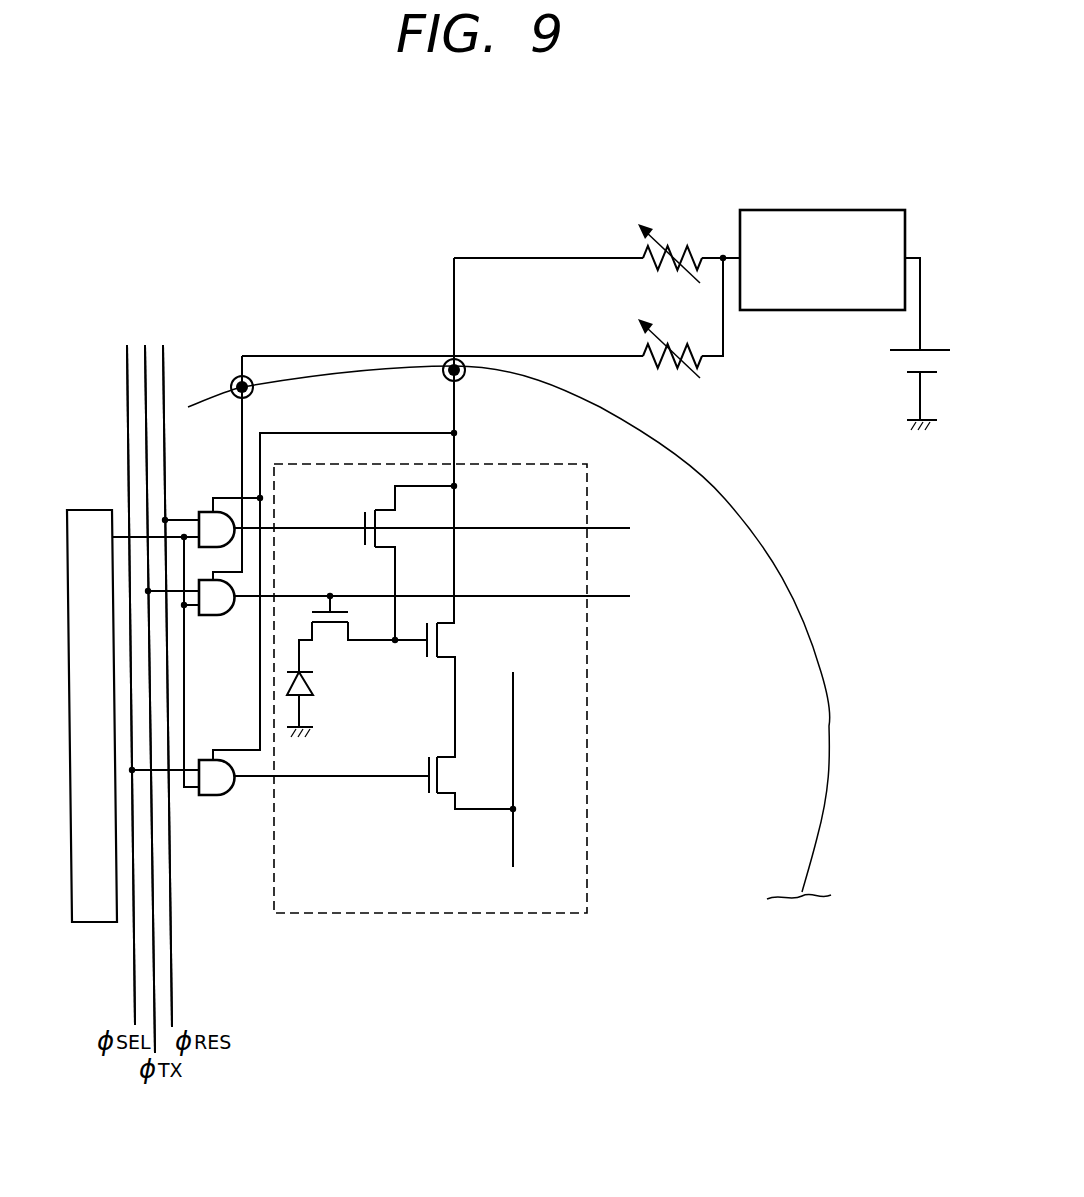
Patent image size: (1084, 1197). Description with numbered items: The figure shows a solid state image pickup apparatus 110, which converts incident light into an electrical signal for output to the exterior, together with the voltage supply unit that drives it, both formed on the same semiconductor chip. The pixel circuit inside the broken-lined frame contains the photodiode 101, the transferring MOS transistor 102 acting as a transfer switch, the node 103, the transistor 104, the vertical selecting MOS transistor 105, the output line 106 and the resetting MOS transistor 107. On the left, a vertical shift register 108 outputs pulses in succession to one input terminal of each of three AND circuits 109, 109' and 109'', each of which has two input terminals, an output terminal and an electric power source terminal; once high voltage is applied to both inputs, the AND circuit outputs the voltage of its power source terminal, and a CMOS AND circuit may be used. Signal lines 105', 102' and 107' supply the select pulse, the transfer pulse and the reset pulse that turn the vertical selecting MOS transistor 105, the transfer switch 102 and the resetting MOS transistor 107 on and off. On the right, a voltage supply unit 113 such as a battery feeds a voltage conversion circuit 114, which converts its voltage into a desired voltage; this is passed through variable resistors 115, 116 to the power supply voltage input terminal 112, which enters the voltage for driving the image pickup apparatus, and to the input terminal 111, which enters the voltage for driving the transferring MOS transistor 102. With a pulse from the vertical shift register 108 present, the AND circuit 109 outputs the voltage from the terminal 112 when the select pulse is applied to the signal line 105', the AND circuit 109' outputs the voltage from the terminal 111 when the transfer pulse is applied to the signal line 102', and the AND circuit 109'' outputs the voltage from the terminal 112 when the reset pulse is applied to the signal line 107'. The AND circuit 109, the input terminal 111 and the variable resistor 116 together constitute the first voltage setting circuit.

The photodiode 101 is at (318, 688).
The transferring MOS transistor 102 is at (347, 643).
The floating diffusion 103 is at (397, 650).
The amplifying transistor 104 is at (462, 632).
The vertical selecting MOS transistor 105 is at (434, 805).
The vertical output line 106 is at (513, 757).
The resetting MOS transistor 107 is at (334, 516).
The vertical shift register 108 is at (95, 922).
The AND circuit 109 is at (221, 809).
The AND circuit 109' is at (224, 624).
The AND circuit 109'' is at (205, 506).
The solid state image pickup apparatus 110 is at (829, 726).
The input terminal 111 is at (254, 392).
The power supply voltage input terminal 112 is at (442, 376).
The voltage supply unit 113 is at (903, 362).
The voltage conversion circuit 114 is at (857, 210).
The variable resistor 115 is at (668, 232).
The variable resistor 116 is at (668, 328).
The signal line 102' is at (135, 672).
The signal line 105' is at (100, 680).
The signal line 107' is at (188, 666).